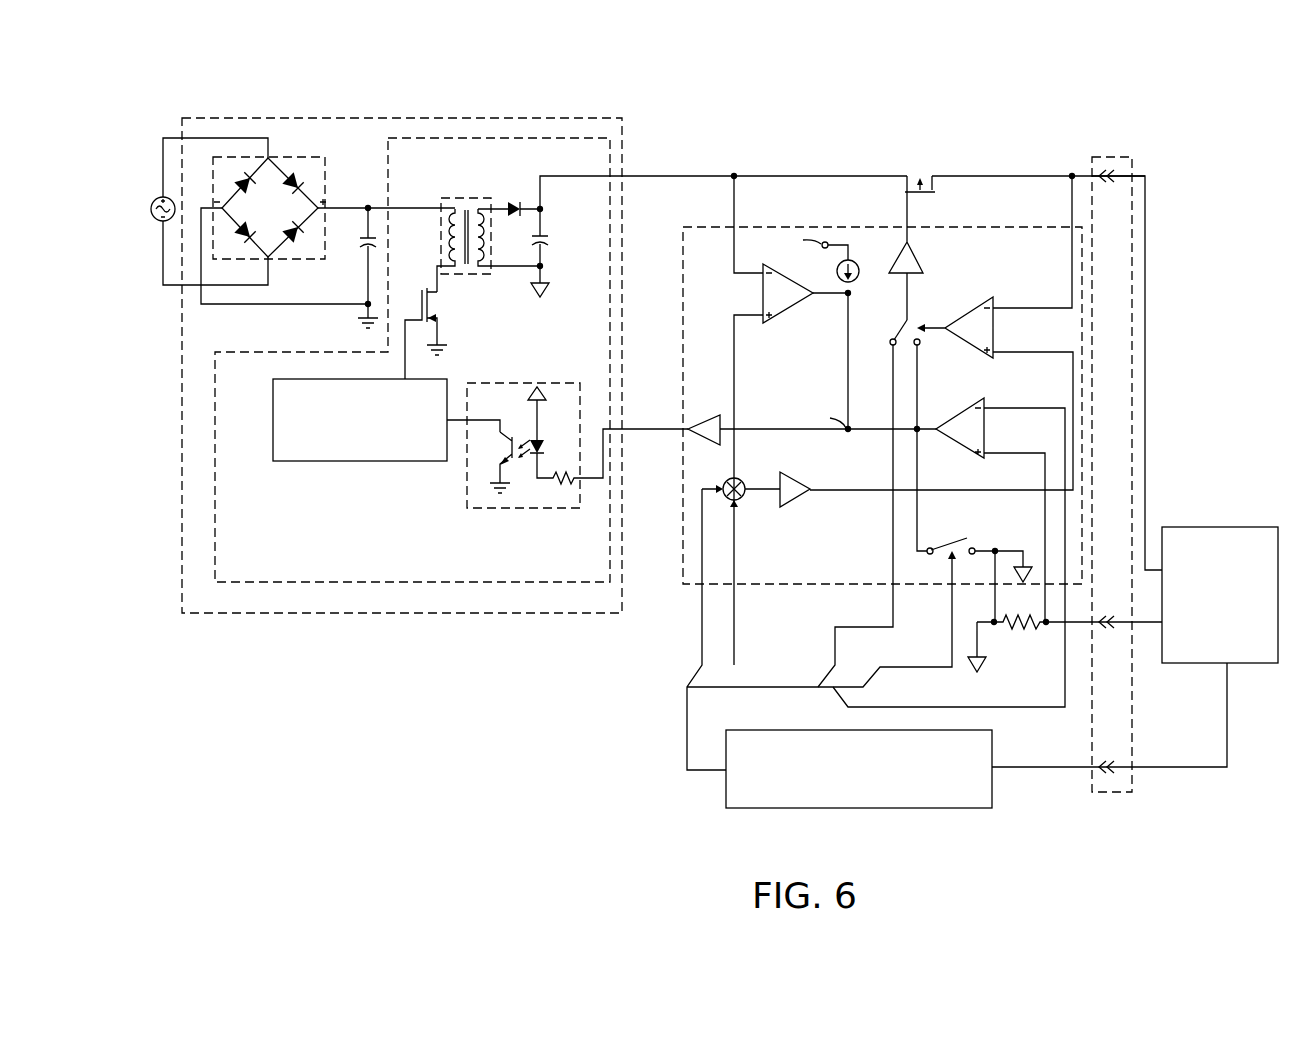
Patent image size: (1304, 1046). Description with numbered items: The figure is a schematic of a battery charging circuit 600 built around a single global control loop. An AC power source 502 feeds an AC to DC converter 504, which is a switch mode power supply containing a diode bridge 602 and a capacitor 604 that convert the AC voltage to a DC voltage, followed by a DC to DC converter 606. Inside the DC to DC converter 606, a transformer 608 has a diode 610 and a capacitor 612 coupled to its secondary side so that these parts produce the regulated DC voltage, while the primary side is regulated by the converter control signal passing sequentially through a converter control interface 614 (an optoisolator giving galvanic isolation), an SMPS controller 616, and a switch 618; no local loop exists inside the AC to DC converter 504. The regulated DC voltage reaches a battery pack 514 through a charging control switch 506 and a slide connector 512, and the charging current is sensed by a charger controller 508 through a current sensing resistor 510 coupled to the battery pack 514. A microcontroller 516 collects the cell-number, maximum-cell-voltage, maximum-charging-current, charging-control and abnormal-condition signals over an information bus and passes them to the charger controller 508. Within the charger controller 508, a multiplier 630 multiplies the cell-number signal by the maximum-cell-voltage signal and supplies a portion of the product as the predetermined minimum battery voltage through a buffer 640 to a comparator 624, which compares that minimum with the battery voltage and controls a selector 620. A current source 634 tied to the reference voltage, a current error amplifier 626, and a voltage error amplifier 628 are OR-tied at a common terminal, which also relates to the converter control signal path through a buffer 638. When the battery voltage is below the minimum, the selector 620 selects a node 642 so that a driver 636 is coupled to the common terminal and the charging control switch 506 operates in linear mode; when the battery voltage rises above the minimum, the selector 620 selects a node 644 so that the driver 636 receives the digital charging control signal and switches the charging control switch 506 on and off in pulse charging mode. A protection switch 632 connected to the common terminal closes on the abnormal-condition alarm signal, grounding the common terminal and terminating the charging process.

The battery charging circuit 600 is at (196, 103).
The AC power source 502 is at (158, 197).
The AC to DC converter 504 is at (260, 613).
The charging control switch 506 is at (910, 176).
The charger controller 508 is at (690, 227).
The current sensing resistor 510 is at (1022, 628).
The slide connector 512 is at (1132, 165).
The battery pack 514 is at (1210, 527).
The microcontroller 516 is at (775, 808).
The diode bridge 602 is at (270, 156).
The capacitor 604 is at (360, 247).
The DC to DC converter 606 is at (405, 582).
The transformer 608 is at (446, 198).
The diode 610 is at (509, 201).
The capacitor 612 is at (546, 238).
The converter control interface 614 is at (505, 508).
The SMPS controller 616 is at (363, 461).
The switch 618 is at (433, 305).
The selector 620 is at (903, 327).
The comparator 624 is at (986, 304).
The current error amplifier 626 is at (975, 456).
The voltage error amplifier 628 is at (772, 320).
The multiplier 630 is at (742, 500).
The protection switch 632 is at (965, 540).
The current source 634 is at (838, 270).
The driver 636 is at (910, 255).
The buffer 638 is at (712, 414).
The buffer 640 is at (788, 473).
The node 642 is at (918, 348).
The node 644 is at (890, 349).